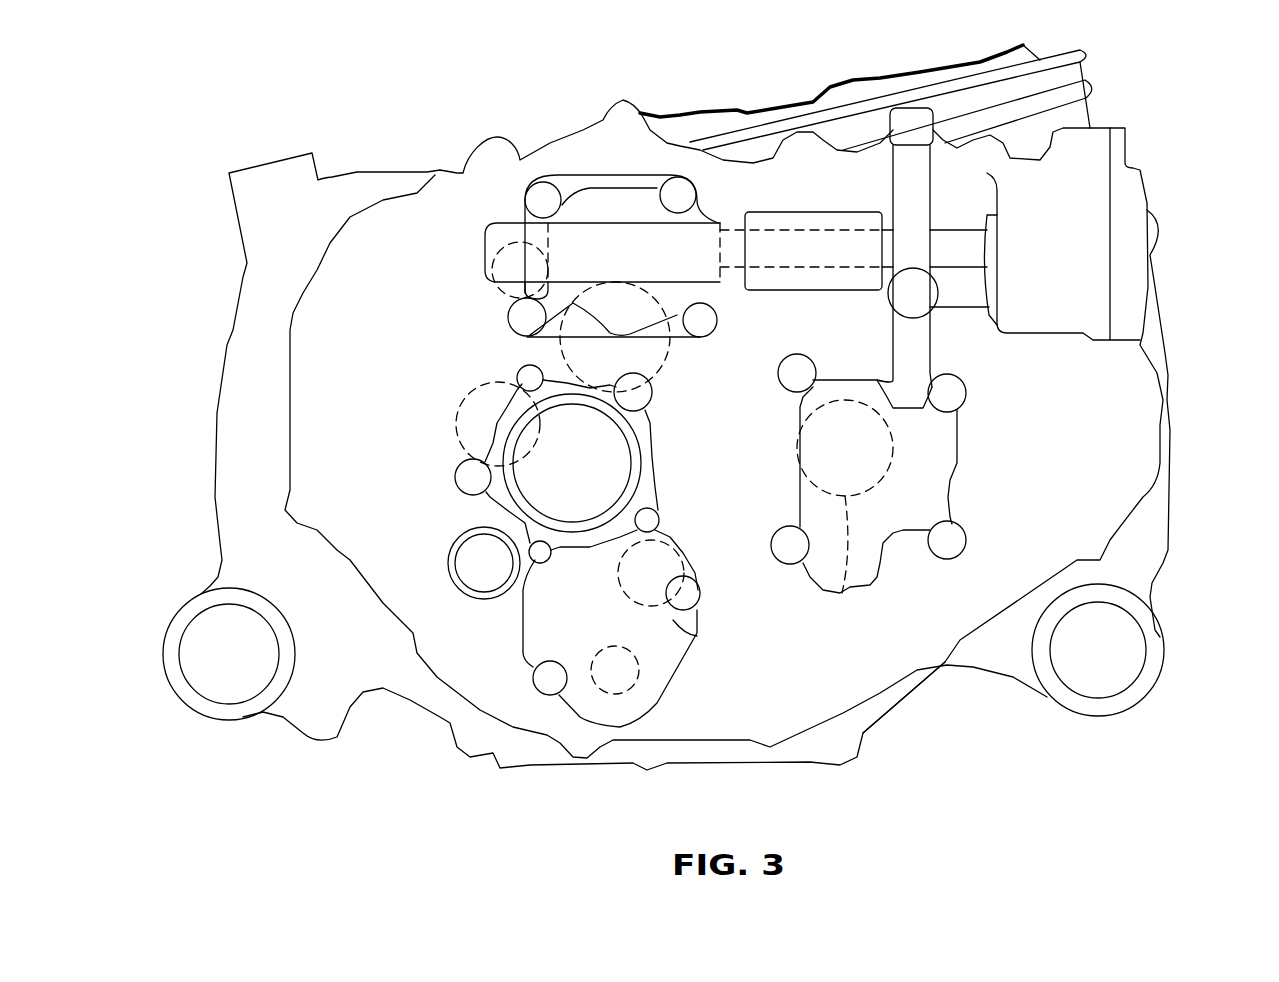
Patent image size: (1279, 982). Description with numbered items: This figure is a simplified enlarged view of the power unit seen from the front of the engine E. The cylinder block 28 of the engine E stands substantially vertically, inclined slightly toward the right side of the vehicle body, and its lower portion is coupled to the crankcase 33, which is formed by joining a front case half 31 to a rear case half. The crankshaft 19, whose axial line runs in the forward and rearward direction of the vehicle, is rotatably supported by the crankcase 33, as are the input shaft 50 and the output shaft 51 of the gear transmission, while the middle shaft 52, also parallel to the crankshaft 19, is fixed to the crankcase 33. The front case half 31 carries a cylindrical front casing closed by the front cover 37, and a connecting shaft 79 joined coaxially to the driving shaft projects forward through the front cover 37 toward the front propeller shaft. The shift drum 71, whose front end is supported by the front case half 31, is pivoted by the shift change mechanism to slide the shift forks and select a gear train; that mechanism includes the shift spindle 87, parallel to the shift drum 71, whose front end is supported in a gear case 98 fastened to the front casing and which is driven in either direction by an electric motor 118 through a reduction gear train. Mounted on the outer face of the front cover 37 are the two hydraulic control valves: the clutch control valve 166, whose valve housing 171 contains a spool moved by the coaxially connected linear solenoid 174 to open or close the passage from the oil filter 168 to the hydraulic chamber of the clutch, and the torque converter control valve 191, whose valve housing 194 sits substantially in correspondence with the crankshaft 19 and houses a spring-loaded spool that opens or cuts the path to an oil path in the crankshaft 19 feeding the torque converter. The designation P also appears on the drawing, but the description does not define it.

The clutch control valve 166 is at (603, 210).
The valve housing 171 is at (693, 217).
The middle shaft 52 is at (500, 232).
The output shaft 51 is at (483, 380).
The electric motor 118 is at (577, 478).
The connecting shaft 79 is at (470, 560).
The input shaft 50 is at (667, 387).
The shift drum 71 is at (663, 535).
The linear solenoid 174 is at (820, 264).
The oil filter 168 is at (1063, 263).
The cylinder block 28 is at (1070, 73).
The engine E is at (1095, 107).
The crankcase 33 is at (1178, 396).
The torque converter control valve 191 is at (968, 432).
The valve housing 194 is at (923, 490).
The front case half 31 is at (1150, 523).
The crankshaft 19 is at (840, 595).
The gear case 98 is at (700, 638).
The shift spindle 87 is at (643, 693).
The front cover 37 is at (987, 603).
The parting plane P is at (915, 707).